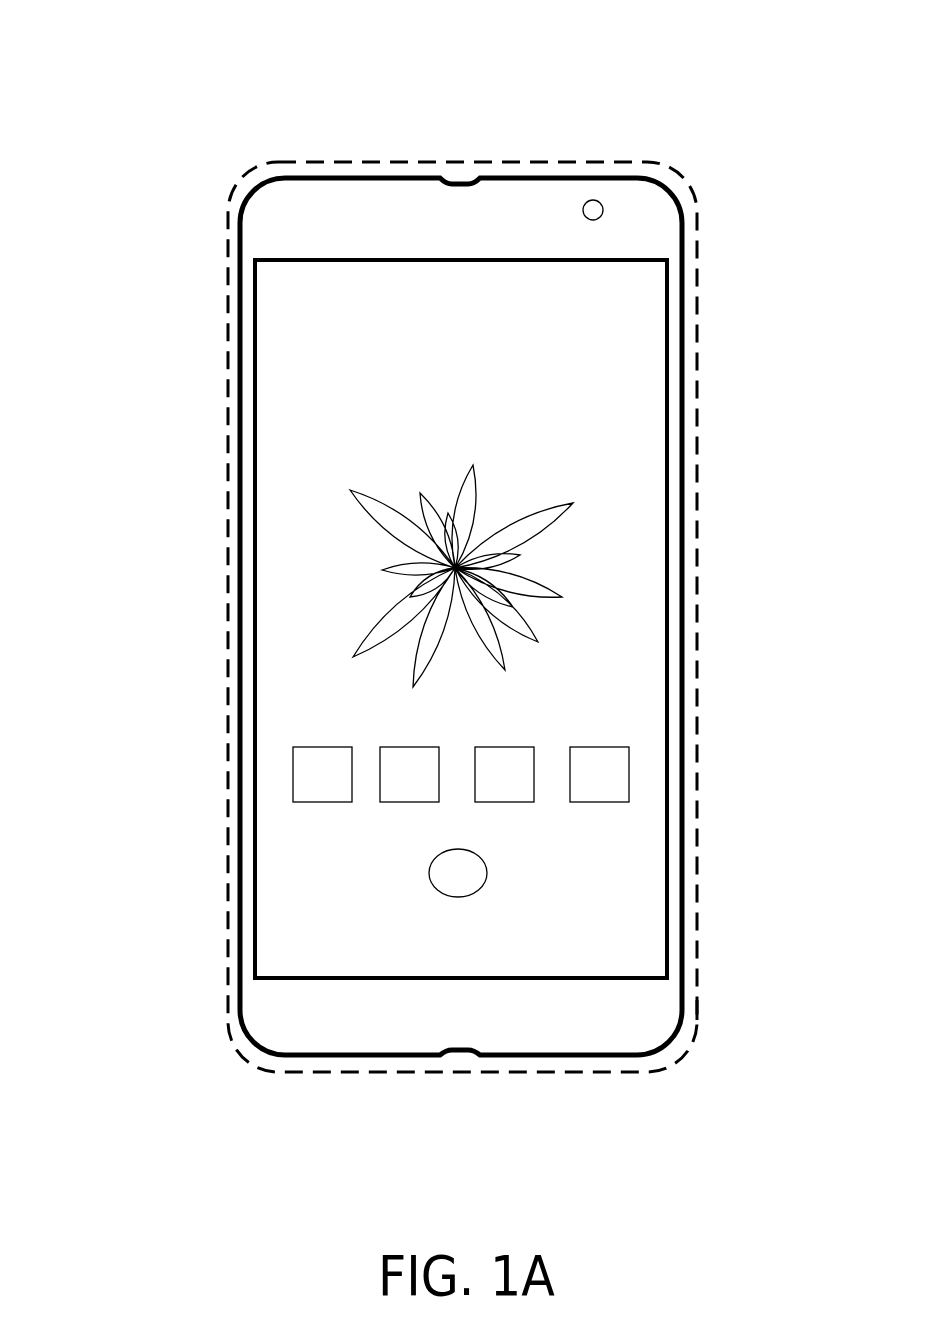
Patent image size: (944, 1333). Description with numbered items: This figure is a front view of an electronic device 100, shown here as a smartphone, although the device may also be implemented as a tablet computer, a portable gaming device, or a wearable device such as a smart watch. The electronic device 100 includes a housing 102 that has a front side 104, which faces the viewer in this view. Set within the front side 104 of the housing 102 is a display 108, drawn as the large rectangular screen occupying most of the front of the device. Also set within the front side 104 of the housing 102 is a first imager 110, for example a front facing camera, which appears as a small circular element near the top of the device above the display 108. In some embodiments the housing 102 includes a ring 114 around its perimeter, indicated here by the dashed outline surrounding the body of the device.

The electronic device 100 is at (168, 738).
The housing 102 is at (653, 192).
The front side 104 is at (643, 453).
The display 108 is at (461, 597).
The first imager 110 is at (593, 200).
The ring 114 is at (698, 1010).